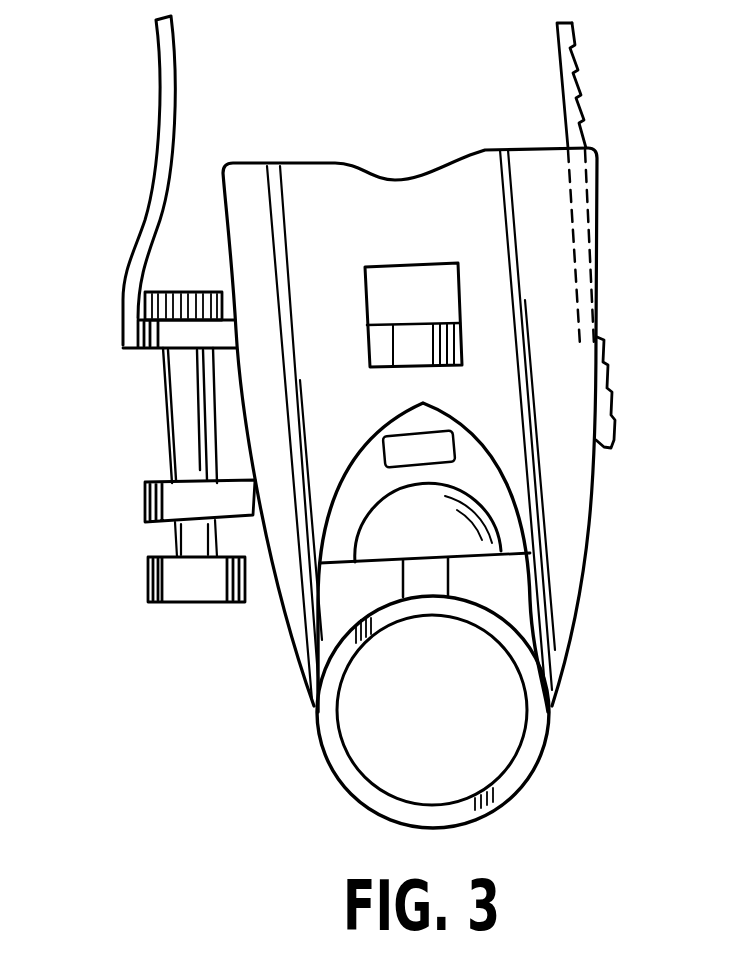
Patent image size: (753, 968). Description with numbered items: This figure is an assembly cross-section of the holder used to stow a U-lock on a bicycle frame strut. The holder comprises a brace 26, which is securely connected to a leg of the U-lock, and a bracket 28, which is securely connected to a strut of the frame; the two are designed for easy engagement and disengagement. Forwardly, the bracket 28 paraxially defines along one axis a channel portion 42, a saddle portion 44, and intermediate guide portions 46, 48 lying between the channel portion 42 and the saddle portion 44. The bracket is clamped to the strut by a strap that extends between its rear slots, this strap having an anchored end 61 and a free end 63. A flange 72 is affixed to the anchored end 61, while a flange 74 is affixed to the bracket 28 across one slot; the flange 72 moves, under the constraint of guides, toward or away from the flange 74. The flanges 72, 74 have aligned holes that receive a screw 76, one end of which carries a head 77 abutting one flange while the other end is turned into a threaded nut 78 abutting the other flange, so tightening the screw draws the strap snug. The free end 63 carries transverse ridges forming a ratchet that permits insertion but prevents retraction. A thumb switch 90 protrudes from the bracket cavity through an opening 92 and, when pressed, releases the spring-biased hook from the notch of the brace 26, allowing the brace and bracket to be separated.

The brace 26 is at (566, 732).
The bracket 28 is at (386, 140).
The channel portion 42 is at (513, 483).
The saddle portion 44 is at (523, 628).
The guide portion 46 is at (338, 603).
The guide portion 48 is at (512, 573).
The anchored end of strap 61 is at (152, 150).
The free end of strap 63 is at (575, 60).
The flange 72 is at (160, 342).
The flange 74 is at (145, 503).
The screw 76 is at (165, 437).
The head 77 is at (148, 583).
The threaded nut 78 is at (182, 290).
The thumb switch 90 is at (428, 366).
The opening 92 is at (397, 285).